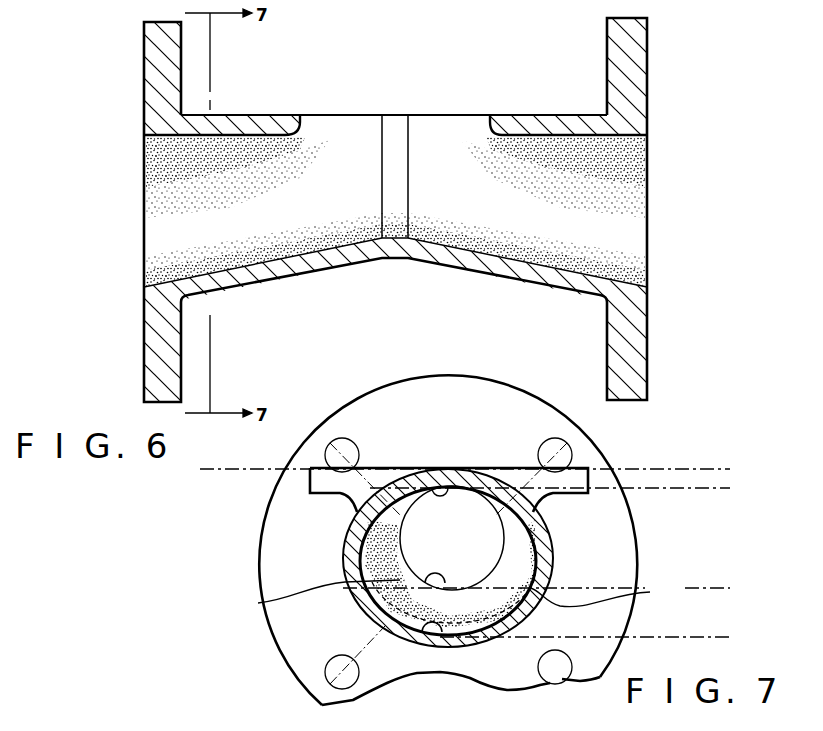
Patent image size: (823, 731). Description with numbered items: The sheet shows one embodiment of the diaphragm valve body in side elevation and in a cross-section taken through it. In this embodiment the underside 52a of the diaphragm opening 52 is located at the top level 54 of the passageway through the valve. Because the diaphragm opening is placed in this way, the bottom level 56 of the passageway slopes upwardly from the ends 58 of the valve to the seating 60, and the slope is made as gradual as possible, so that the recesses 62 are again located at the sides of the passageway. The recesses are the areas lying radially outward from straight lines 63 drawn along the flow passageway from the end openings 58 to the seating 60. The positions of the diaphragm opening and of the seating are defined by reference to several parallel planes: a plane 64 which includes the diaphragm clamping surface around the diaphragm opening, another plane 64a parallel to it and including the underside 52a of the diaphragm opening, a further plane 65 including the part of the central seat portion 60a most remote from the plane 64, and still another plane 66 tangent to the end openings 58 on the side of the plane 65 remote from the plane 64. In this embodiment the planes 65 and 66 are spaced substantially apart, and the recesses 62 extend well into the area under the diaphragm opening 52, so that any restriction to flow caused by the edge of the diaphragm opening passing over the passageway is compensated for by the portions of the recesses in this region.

In FIG. 6, the diaphragm opening 52 is at (436, 118).
In FIG. 6, the underside of diaphragm opening 52a is at (497, 133).
In FIG. 7, the underside of diaphragm opening 52a is at (441, 486).
In FIG. 6, the top level of passageway 54 is at (232, 140).
In FIG. 6, the bottom level of passageway 56 is at (284, 262).
In FIG. 7, the bottom level of passageway 56 is at (405, 650).
In FIG. 6, the ends of the valve 58 is at (144, 231).
In FIG. 7, the ends of the valve 58 is at (470, 650).
In FIG. 6, the seating 60 is at (426, 199).
In FIG. 7, the central seat portion 60a is at (395, 602).
In FIG. 7, the recesses 62 is at (448, 597).
In FIG. 7, the straight lines 63 is at (512, 563).
In FIG. 7, the plane 64 is at (695, 466).
In FIG. 7, the plane 64a is at (698, 492).
In FIG. 7, the plane 65 is at (713, 585).
In FIG. 7, the plane 66 is at (698, 640).